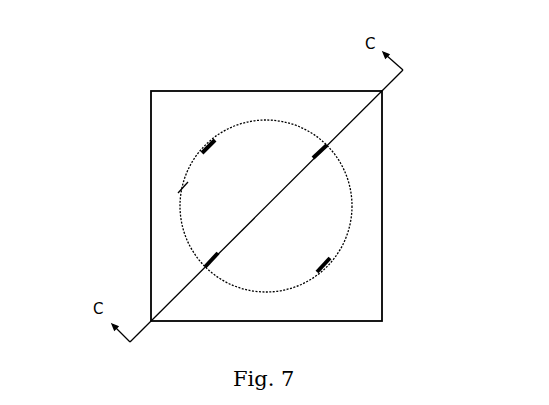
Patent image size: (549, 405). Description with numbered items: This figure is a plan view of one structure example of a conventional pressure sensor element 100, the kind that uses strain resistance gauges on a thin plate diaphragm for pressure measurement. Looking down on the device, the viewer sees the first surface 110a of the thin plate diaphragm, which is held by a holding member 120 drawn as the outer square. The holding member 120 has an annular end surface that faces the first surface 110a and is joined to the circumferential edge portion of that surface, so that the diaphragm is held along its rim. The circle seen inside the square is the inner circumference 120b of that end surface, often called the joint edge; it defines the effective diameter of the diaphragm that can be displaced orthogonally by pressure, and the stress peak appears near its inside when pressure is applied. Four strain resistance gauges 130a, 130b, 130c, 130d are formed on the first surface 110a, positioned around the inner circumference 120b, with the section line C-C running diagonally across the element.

The pressure sensor element 100 is at (93, 53).
The first surface of the diaphragm 110a is at (332, 202).
The holding member 120 is at (320, 90).
The inner circumference of the end surface 120b is at (178, 193).
The strain resistance gauge 130a is at (326, 151).
The strain resistance gauge 130b is at (330, 265).
The strain resistance gauge 130c is at (206, 264).
The strain resistance gauge 130d is at (203, 150).